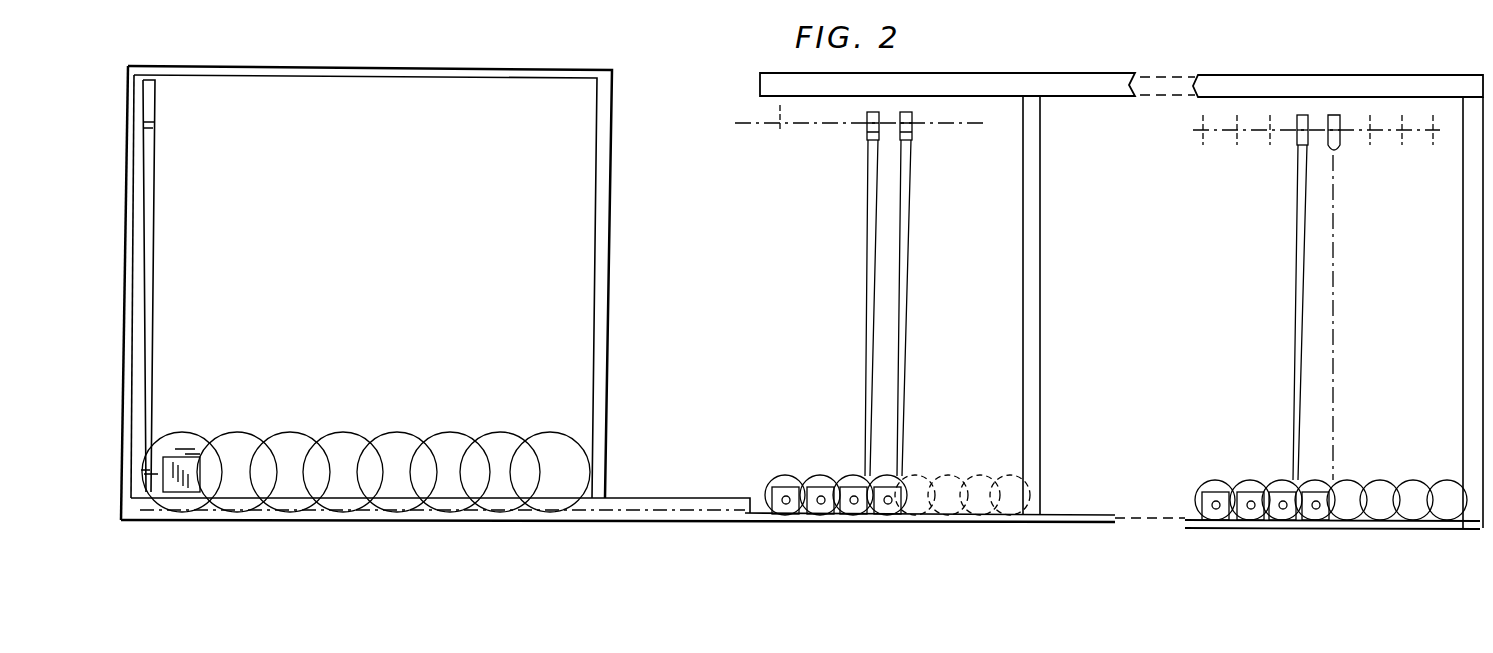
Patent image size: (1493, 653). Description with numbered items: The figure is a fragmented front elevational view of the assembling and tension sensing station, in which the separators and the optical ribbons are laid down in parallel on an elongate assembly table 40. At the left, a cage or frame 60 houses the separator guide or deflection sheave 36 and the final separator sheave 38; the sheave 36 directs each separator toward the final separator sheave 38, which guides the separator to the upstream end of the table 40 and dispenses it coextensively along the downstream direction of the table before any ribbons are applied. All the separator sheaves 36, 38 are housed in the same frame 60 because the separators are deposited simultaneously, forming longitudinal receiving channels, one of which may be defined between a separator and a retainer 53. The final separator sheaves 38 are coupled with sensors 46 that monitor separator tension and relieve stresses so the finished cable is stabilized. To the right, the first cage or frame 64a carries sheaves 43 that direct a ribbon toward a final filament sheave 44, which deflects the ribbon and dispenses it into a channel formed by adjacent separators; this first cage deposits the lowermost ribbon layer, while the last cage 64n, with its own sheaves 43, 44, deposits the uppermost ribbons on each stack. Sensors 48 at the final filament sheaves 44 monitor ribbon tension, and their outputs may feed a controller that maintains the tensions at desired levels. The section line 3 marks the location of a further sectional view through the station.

The section line 3- 3 is at (113, 249).
The sheave 36 is at (154, 123).
The final separator sheave 38 is at (178, 447).
The assembly table 40 is at (755, 523).
The sheaves 43 is at (868, 128).
The final filament sheave 44 is at (784, 488).
The sensor 46 is at (193, 484).
The sensor 48 is at (822, 504).
The retainer 53 is at (662, 505).
The frame 60 is at (425, 68).
The first cage or frame 64a is at (762, 84).
The cage 64n is at (1432, 62).